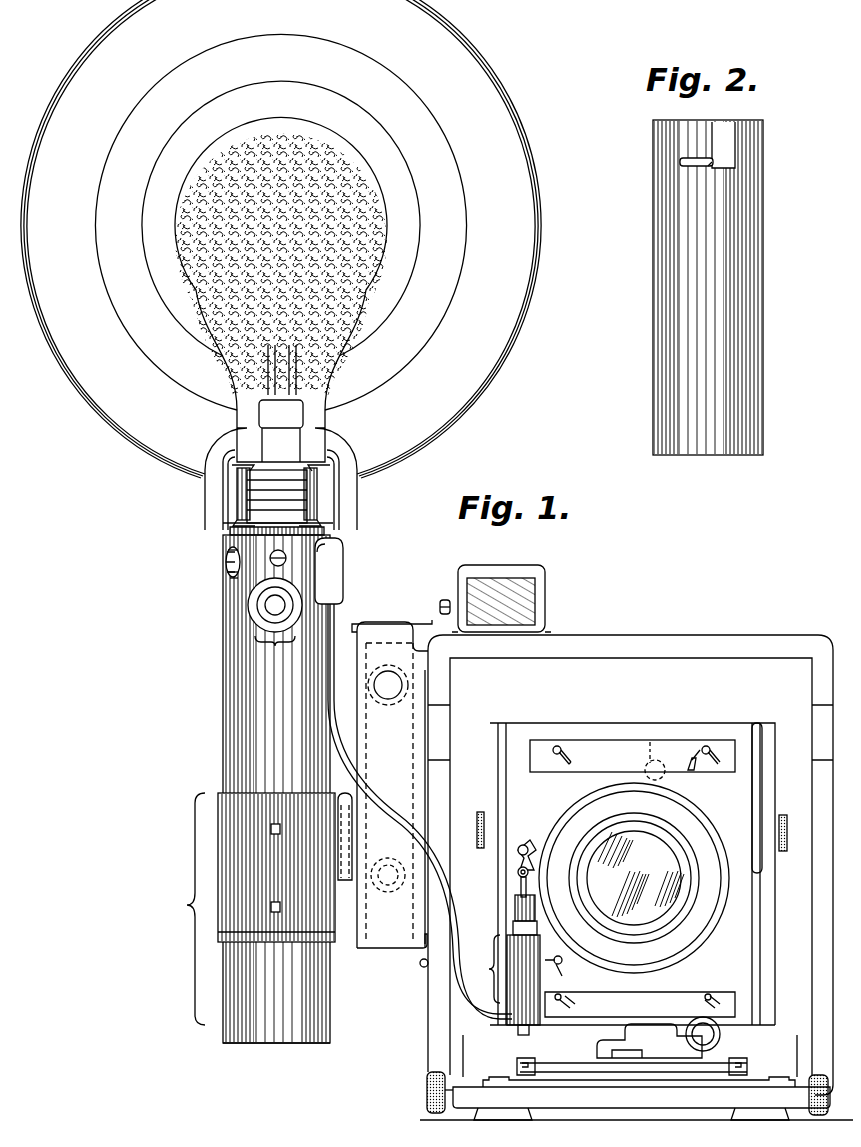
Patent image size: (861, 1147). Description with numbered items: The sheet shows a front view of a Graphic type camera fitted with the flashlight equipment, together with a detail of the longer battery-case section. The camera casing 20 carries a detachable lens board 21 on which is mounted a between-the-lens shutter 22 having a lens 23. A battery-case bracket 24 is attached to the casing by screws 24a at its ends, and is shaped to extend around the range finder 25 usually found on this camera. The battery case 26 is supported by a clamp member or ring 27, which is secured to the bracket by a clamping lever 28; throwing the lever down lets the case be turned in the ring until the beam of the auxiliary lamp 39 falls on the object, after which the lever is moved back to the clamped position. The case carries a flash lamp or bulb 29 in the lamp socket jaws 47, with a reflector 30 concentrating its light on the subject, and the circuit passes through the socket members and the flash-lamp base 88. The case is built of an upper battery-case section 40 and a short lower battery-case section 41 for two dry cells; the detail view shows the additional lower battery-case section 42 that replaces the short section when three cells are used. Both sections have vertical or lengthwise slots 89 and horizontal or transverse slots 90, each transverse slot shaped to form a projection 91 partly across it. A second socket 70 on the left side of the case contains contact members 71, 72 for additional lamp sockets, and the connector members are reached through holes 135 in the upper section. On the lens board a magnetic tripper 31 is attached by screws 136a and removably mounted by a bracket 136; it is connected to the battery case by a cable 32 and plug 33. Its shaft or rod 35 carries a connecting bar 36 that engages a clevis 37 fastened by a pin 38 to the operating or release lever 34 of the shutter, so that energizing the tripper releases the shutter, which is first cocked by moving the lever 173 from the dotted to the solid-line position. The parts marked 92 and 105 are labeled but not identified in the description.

In FIG. 1, the camera casing 20 is at (692, 664).
In FIG. 1, the lens board 21 is at (745, 808).
In FIG. 1, the between-the-lens shutter 22 is at (672, 946).
In FIG. 1, the lens 23 is at (668, 852).
In FIG. 1, the battery-case bracket 24 is at (397, 630).
In FIG. 1, the screws 24a is at (440, 603).
In FIG. 1, the range finder 25 is at (388, 893).
In FIG. 1, the battery case 26 is at (242, 909).
In FIG. 1, the clamp member or ring 27 is at (225, 932).
In FIG. 1, the clamping lever 28 is at (346, 834).
In FIG. 1, the flash lamp or bulb 29 is at (376, 238).
In FIG. 1, the reflector 30 is at (477, 392).
In FIG. 1, the magnetic tripper 31 is at (504, 965).
In FIG. 1, the cable 32 is at (338, 624).
In FIG. 1, the plug 33 is at (336, 570).
In FIG. 1, the operating or release lever 34 is at (535, 843).
In FIG. 1, the shaft or rod 35 is at (520, 890).
In FIG. 1, the connecting bar 36 is at (530, 873).
In FIG. 1, the clevis 37 is at (518, 872).
In FIG. 1, the pin 38 is at (518, 851).
In FIG. 1, the auxiliary lamp 39 is at (275, 626).
In FIG. 1, the upper battery-case section 40 is at (223, 717).
In FIG. 1, the lower battery-case section 41 is at (275, 1040).
In FIG. 2, the additional lower battery-case section 42 is at (762, 270).
In FIG. 1, the lamp socket jaws 47 is at (240, 504).
In FIG. 1, the second socket 70 is at (230, 563).
In FIG. 1, the contact member 71 is at (232, 553).
In FIG. 1, the contact member 72 is at (232, 571).
In FIG. 1, the flash-lamp base 88 is at (292, 482).
In FIG. 2, the vertical or lengthwise slots 89 is at (727, 130).
In FIG. 2, the horizontal or transverse slots 90 is at (700, 158).
In FIG. 2, the projection 91 is at (712, 167).
In FIG. 1, the tabs 92 is at (276, 836).
In FIG. 1, the screw 105 is at (287, 554).
In FIG. 1, the holes 135 is at (233, 582).
In FIG. 1, the bracket 136 is at (556, 965).
In FIG. 1, the screws 136a is at (562, 966).
In FIG. 1, the lever 173 is at (695, 764).